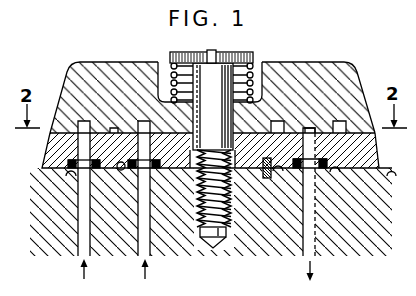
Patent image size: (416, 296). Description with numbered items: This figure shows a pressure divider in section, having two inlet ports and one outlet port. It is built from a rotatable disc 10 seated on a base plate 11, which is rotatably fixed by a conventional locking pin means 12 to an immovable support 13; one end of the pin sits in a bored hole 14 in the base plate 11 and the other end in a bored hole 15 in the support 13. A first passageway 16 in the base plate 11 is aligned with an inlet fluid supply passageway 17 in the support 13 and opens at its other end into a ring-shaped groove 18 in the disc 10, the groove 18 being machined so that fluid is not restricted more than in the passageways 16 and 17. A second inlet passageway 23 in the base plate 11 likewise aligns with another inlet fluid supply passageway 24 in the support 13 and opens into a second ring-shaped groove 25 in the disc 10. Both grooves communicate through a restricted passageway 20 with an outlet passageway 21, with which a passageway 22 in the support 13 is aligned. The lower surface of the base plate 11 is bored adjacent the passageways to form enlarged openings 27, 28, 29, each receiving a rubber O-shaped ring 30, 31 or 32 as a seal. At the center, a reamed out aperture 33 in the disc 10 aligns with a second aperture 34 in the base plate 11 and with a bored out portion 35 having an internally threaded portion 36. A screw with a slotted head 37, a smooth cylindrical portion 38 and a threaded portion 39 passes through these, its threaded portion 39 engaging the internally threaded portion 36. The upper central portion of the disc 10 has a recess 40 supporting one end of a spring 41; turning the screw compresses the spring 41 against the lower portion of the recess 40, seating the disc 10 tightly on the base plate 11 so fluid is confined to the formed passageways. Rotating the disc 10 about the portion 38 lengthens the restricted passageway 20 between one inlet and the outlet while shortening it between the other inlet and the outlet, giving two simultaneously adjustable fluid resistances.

The rotatable disc 10 is at (328, 62).
The base plate 11 is at (384, 153).
The locking pin means 12 is at (227, 203).
The immovable support 13 is at (396, 176).
The bored hole 14 is at (271, 172).
The bored hole 15 is at (276, 176).
The first passageway 16 is at (72, 141).
The inlet fluid supply passageway 17 is at (84, 217).
The groove 18 is at (77, 126).
The restricted passageway 20 is at (113, 128).
The outlet passageway 21 is at (383, 139).
The passageway 22 is at (309, 217).
The second inlet passageway 23 is at (150, 149).
The inlet fluid supply passageway 24 is at (147, 217).
The groove 25 is at (143, 121).
The enlarged opening 27 is at (67, 163).
The enlarged opening 28 is at (112, 180).
The enlarged opening 29 is at (330, 168).
The O-shaped ring 30 is at (318, 180).
The O-shaped ring 31 is at (70, 176).
The O-shaped ring 32 is at (138, 175).
The reamed out aperture 33 is at (192, 119).
The second aperture 34 is at (235, 149).
The bored out portion 35 is at (216, 236).
The internally threaded portion 36 is at (194, 184).
The slotted head 37 is at (243, 52).
The smooth cylindrical portion 38 is at (206, 50).
The threaded portion 39 is at (235, 200).
The recess 40 is at (259, 66).
The spring 41 is at (173, 66).